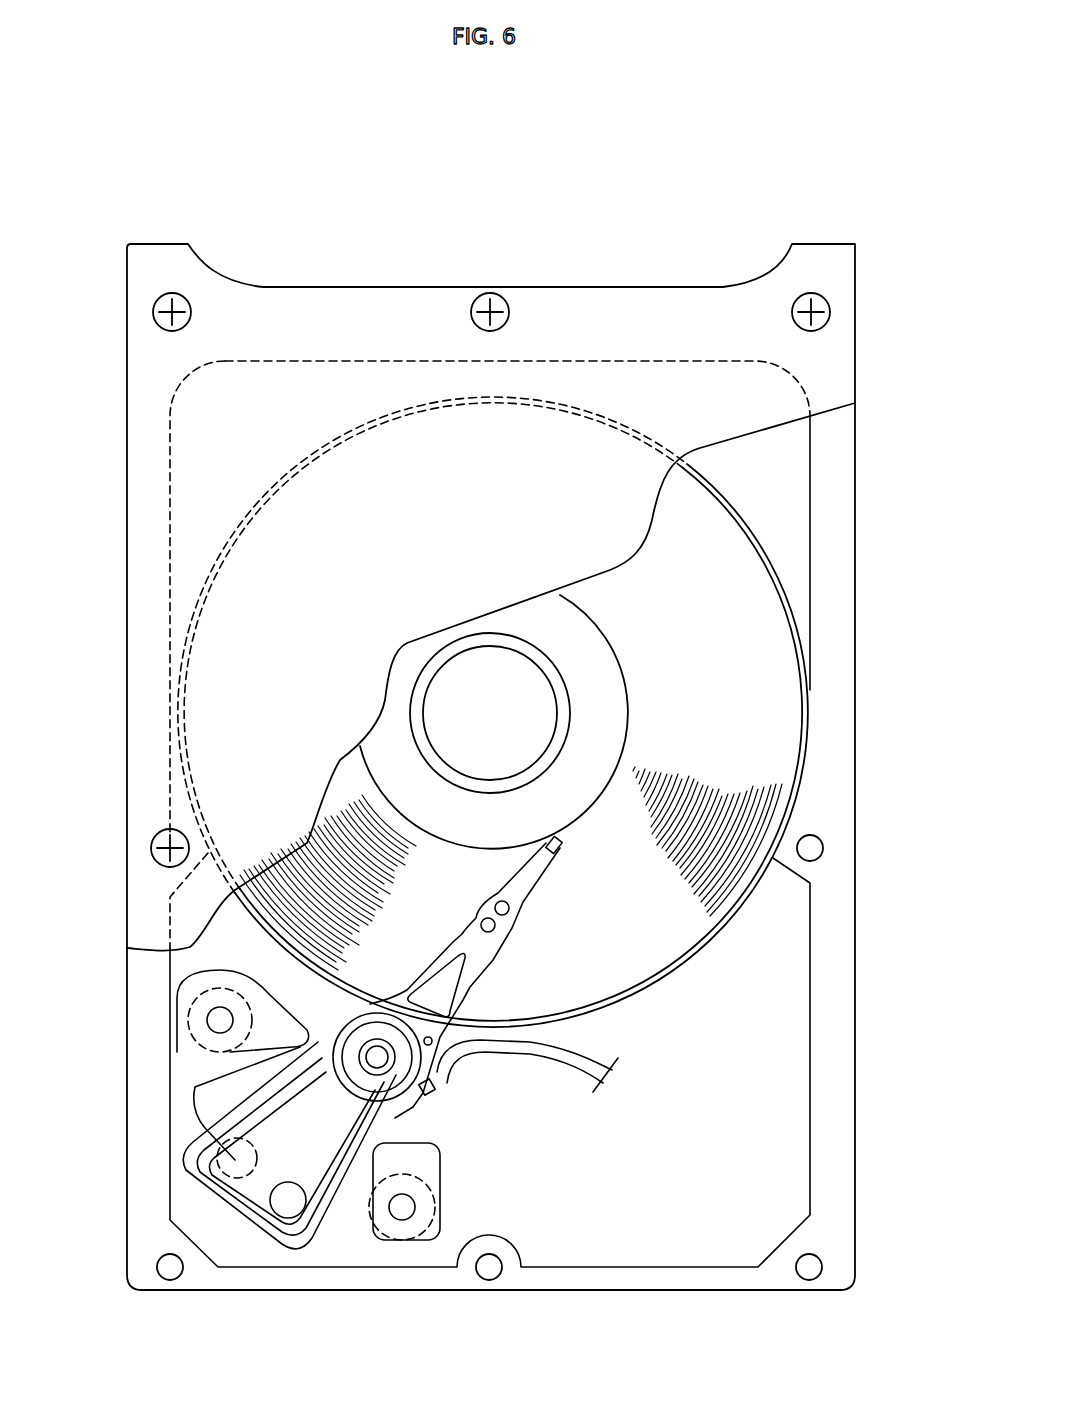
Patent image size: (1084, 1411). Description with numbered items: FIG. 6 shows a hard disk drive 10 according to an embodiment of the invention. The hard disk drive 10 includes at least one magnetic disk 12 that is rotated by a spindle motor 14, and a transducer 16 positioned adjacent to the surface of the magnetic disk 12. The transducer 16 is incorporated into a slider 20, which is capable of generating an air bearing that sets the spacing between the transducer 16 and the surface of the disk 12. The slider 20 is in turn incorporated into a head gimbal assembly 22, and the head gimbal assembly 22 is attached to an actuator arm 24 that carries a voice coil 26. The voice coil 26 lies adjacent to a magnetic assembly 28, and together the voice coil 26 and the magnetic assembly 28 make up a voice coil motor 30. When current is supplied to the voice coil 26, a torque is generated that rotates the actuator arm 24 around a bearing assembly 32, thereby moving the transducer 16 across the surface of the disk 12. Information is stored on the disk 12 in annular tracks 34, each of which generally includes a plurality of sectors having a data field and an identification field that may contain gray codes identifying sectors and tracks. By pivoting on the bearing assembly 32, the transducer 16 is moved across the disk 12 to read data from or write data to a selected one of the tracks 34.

The hard disk drive 10 is at (648, 190).
The magnetic disk 12 is at (766, 637).
The spindle motor 14 is at (466, 688).
The transducer 16 is at (560, 843).
The slider 20 is at (538, 866).
The head gimbal assembly 22 is at (500, 967).
The actuator arm 24 is at (290, 1050).
The voice coil 26 is at (210, 1152).
The magnetic assembly 28 is at (217, 1090).
The voice coil motor 30 is at (343, 1224).
The bearing assembly 32 is at (393, 1070).
The annular tracks 34 is at (338, 827).